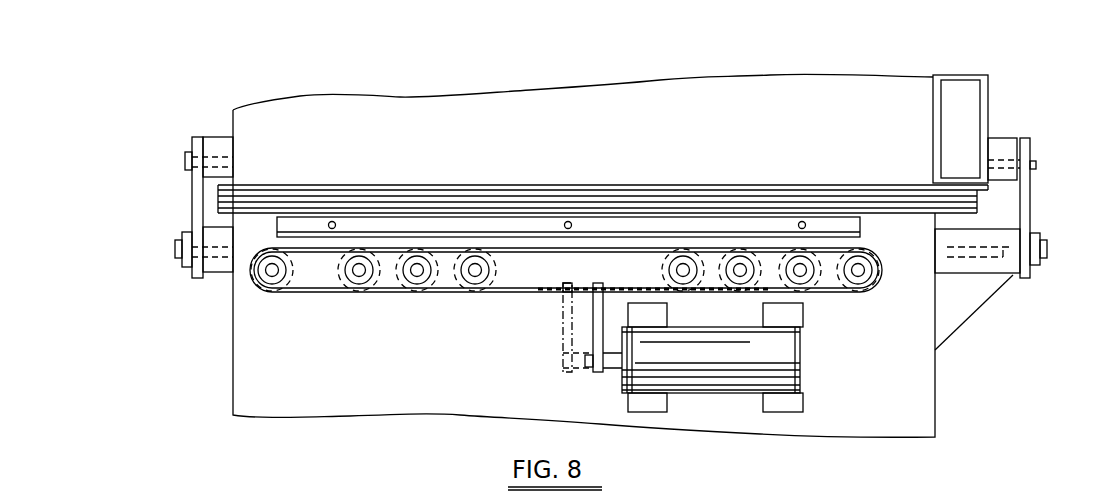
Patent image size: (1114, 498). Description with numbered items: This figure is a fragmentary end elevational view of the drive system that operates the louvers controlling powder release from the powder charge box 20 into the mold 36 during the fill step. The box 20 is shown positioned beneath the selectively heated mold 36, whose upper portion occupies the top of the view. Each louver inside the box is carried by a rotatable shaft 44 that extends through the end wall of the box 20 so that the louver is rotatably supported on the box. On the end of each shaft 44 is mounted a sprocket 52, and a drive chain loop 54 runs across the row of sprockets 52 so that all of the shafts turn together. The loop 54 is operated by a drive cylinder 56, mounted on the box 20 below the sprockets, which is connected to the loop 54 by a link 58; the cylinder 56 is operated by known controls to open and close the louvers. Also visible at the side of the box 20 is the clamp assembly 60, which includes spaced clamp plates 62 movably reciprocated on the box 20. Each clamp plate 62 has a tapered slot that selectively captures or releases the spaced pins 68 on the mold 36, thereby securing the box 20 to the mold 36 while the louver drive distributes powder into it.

The powder charge box 20 is at (942, 395).
The mold 36 is at (903, 127).
The rotatable shaft 44 is at (858, 272).
The sprocket 52 is at (358, 278).
The drive chain loop 54 is at (540, 296).
The drive cylinder 56 is at (727, 377).
The link 58 is at (596, 333).
The clamp assembly 60 is at (1035, 220).
The clamp plates 62 is at (1025, 197).
The pins 68 is at (1034, 165).